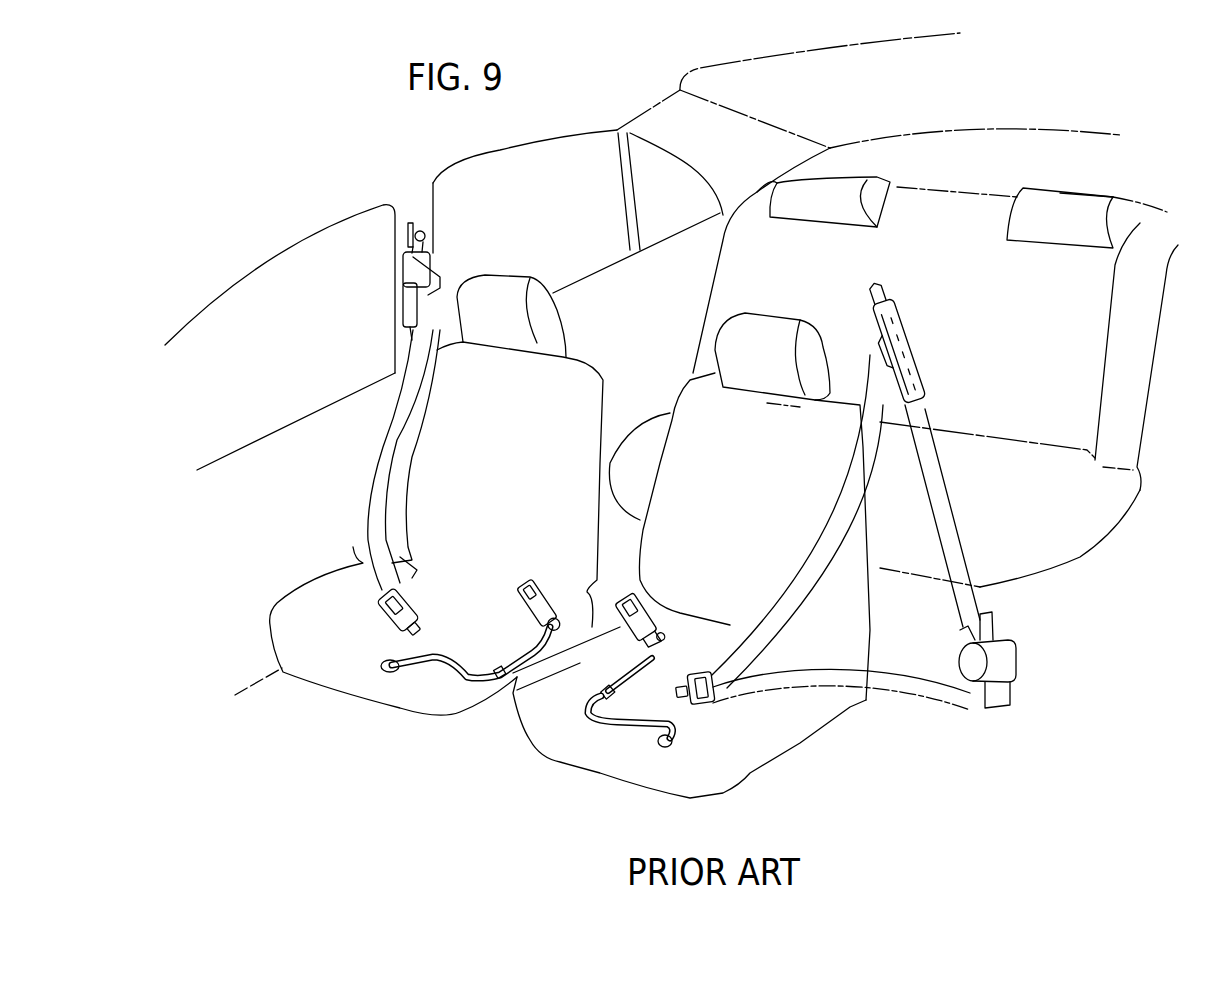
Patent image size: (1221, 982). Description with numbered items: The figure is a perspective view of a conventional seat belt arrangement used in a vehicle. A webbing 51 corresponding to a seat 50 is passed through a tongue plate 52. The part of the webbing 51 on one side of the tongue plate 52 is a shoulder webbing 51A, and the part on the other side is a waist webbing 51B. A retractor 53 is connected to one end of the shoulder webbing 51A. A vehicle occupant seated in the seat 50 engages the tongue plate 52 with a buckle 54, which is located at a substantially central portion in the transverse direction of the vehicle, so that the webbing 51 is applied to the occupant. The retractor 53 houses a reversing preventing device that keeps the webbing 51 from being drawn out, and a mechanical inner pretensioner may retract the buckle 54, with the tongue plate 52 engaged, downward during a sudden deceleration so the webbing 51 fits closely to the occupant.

The seat 50 is at (663, 800).
The webbing 51 is at (868, 702).
The shoulder webbing 51A is at (787, 615).
The waist webbing 51B is at (917, 693).
The tongue plate 52 is at (695, 703).
The retractor 53 is at (1013, 670).
The buckle 54 is at (525, 705).